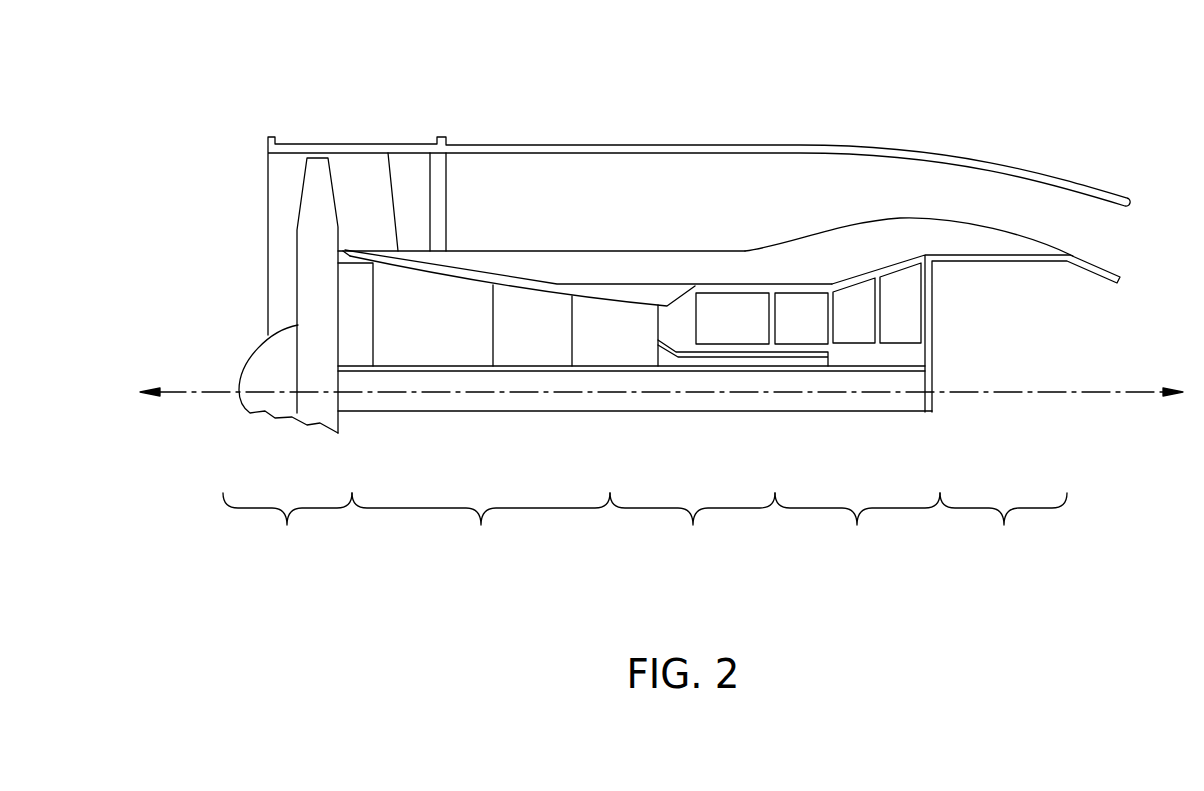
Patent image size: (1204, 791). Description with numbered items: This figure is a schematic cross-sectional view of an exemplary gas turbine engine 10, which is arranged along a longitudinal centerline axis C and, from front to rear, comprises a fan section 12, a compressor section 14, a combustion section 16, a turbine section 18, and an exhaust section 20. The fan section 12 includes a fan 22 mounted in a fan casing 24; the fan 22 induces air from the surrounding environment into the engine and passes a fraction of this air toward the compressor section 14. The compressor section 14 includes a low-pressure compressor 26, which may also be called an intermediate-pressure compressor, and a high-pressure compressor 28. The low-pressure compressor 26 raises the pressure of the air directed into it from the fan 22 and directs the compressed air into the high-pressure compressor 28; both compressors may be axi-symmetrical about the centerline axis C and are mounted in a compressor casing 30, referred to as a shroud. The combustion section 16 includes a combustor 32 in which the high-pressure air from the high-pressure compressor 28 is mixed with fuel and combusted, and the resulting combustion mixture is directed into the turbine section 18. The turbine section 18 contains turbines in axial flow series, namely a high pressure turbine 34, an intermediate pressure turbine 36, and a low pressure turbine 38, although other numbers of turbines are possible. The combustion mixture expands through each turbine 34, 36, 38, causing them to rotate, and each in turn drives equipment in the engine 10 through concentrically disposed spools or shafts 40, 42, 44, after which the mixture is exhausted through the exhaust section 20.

The gas turbine engine 10 is at (481, 105).
The fan section 12 is at (287, 525).
The compressor section 14 is at (481, 525).
The combustion section 16 is at (692, 525).
The turbine section 18 is at (857, 525).
The exhaust section 20 is at (1003, 525).
The fan 22 is at (308, 252).
The fan casing 24 is at (365, 145).
The low-pressure compressor 26 is at (440, 357).
The high-pressure compressor 28 is at (612, 355).
The compressor casing 30 is at (640, 295).
The combustor 32 is at (743, 305).
The high pressure turbine 34 is at (805, 305).
The intermediate pressure turbine 36 is at (860, 295).
The low pressure turbine 38 is at (913, 287).
The shaft 40 is at (698, 352).
The shaft 42 is at (780, 367).
The shaft 44 is at (847, 400).
The longitudinal centerline axis C is at (1110, 392).